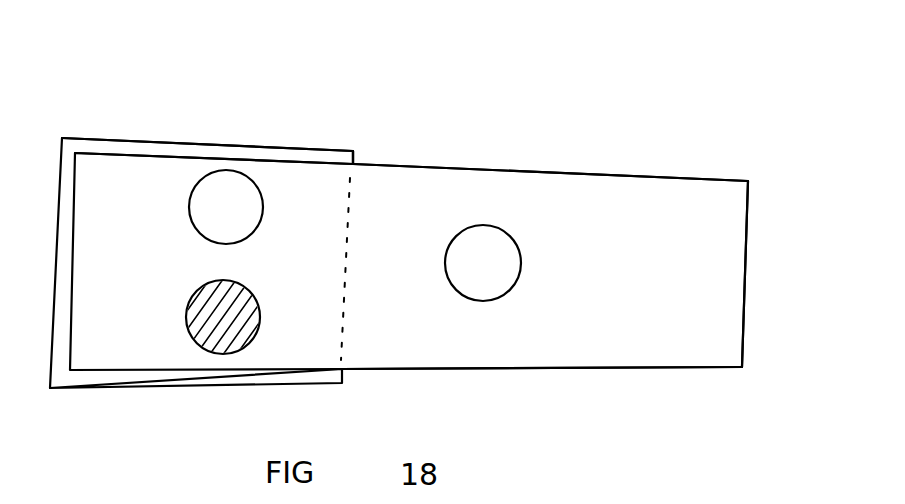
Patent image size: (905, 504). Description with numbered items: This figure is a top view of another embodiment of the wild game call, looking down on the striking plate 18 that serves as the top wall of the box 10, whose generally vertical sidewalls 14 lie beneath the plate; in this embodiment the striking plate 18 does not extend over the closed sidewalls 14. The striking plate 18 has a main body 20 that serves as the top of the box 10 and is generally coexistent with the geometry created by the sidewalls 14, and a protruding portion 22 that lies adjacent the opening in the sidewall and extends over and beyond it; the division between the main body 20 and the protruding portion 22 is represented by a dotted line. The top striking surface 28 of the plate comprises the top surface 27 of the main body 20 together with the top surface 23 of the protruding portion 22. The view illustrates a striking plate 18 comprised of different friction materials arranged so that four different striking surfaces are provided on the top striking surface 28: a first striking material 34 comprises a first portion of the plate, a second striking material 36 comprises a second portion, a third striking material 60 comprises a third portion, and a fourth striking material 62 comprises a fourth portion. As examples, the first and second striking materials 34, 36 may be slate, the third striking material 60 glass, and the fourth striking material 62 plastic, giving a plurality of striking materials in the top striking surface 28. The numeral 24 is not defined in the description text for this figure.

The box 10 is at (177, 152).
The sidewalls 14 is at (243, 155).
The striking plate 18 is at (579, 215).
The main body 20 is at (141, 263).
The protruding portion 22 is at (631, 294).
The top surface of protruding portion 23 is at (423, 205).
The end edge 24 is at (745, 283).
The top surface of main body 27 is at (292, 215).
The top striking surface 28 is at (388, 197).
The first striking material 34 is at (543, 325).
The second striking material 36 is at (230, 330).
The third striking material 60 is at (223, 202).
The fourth striking material 62 is at (485, 253).